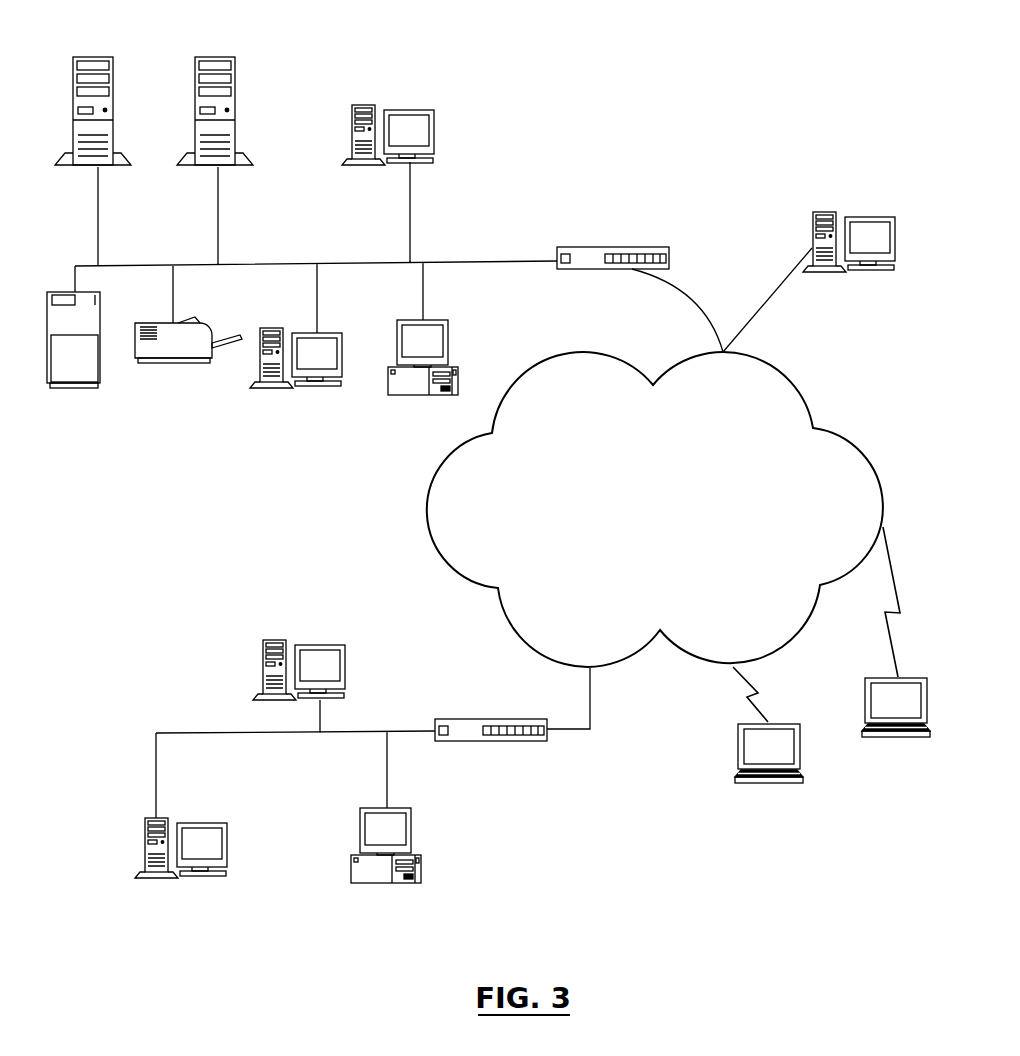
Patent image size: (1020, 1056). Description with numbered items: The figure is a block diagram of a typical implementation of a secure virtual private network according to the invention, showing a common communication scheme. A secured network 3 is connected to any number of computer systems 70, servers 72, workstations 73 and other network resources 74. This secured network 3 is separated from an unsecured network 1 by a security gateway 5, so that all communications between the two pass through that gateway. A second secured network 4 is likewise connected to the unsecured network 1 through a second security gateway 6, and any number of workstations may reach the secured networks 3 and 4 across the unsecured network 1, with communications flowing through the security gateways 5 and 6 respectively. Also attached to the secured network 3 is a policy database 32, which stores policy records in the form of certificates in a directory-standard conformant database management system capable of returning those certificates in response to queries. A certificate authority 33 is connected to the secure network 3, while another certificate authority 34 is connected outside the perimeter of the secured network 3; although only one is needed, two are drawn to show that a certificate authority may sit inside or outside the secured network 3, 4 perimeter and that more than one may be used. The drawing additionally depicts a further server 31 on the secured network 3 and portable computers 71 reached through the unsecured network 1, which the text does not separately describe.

The unsecured network 1 is at (645, 525).
The secured network 3 is at (472, 260).
The second secured network 4 is at (180, 733).
The security gateway 5 is at (620, 247).
The second security gateway 6 is at (482, 740).
The server 31 is at (108, 168).
The policy database 32 is at (228, 168).
The certificate authority 33 is at (370, 163).
The certificate authority 34 is at (857, 273).
The computer system 70 is at (75, 390).
The laptop computer 71 is at (768, 785).
The server 72 is at (305, 390).
The workstation 73 is at (410, 397).
The other network resource 74 is at (172, 364).